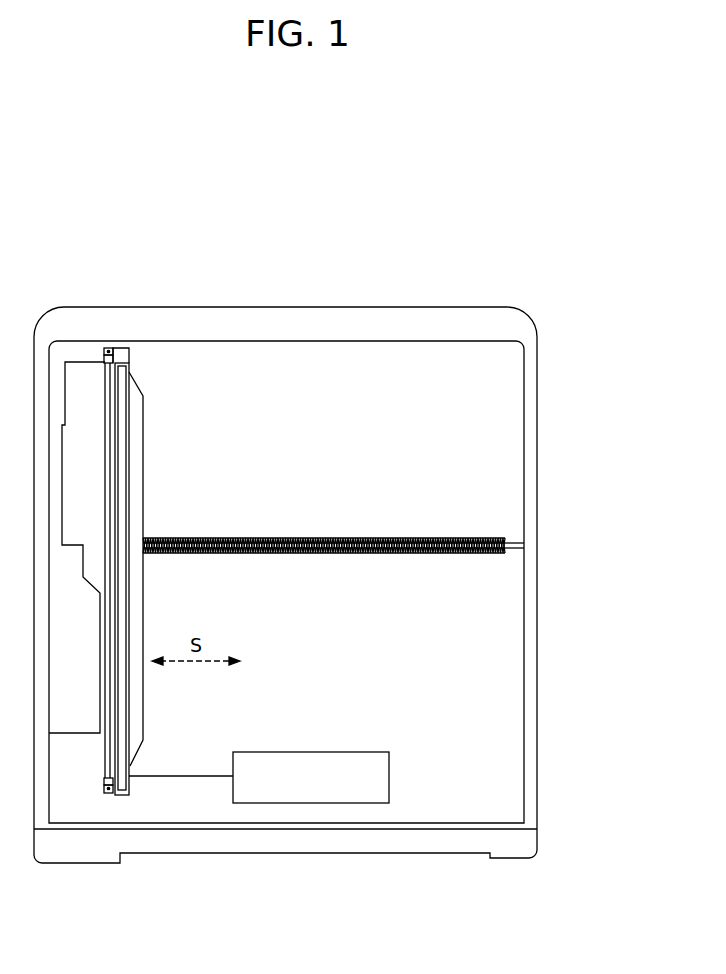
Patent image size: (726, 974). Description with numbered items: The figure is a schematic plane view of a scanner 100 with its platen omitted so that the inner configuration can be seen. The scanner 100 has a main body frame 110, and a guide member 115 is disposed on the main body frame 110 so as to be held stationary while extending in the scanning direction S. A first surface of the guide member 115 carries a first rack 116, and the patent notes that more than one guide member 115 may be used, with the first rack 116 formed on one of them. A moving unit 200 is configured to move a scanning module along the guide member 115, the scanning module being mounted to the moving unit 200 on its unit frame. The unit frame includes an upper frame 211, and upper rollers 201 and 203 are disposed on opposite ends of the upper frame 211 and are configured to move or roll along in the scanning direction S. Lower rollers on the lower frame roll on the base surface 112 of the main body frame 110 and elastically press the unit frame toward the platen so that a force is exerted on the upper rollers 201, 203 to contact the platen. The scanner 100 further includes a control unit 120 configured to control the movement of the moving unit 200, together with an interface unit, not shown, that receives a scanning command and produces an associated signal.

The scanner 100 is at (534, 270).
The main body frame 110 is at (531, 606).
The base surface 112 is at (504, 738).
The guide member 115 is at (524, 543).
The first rack 116 is at (317, 537).
The control unit 120 is at (313, 803).
The moving unit 200 is at (144, 382).
The upper roller 201 is at (107, 348).
The upper roller 203 is at (113, 795).
The upper frame 211 is at (123, 352).